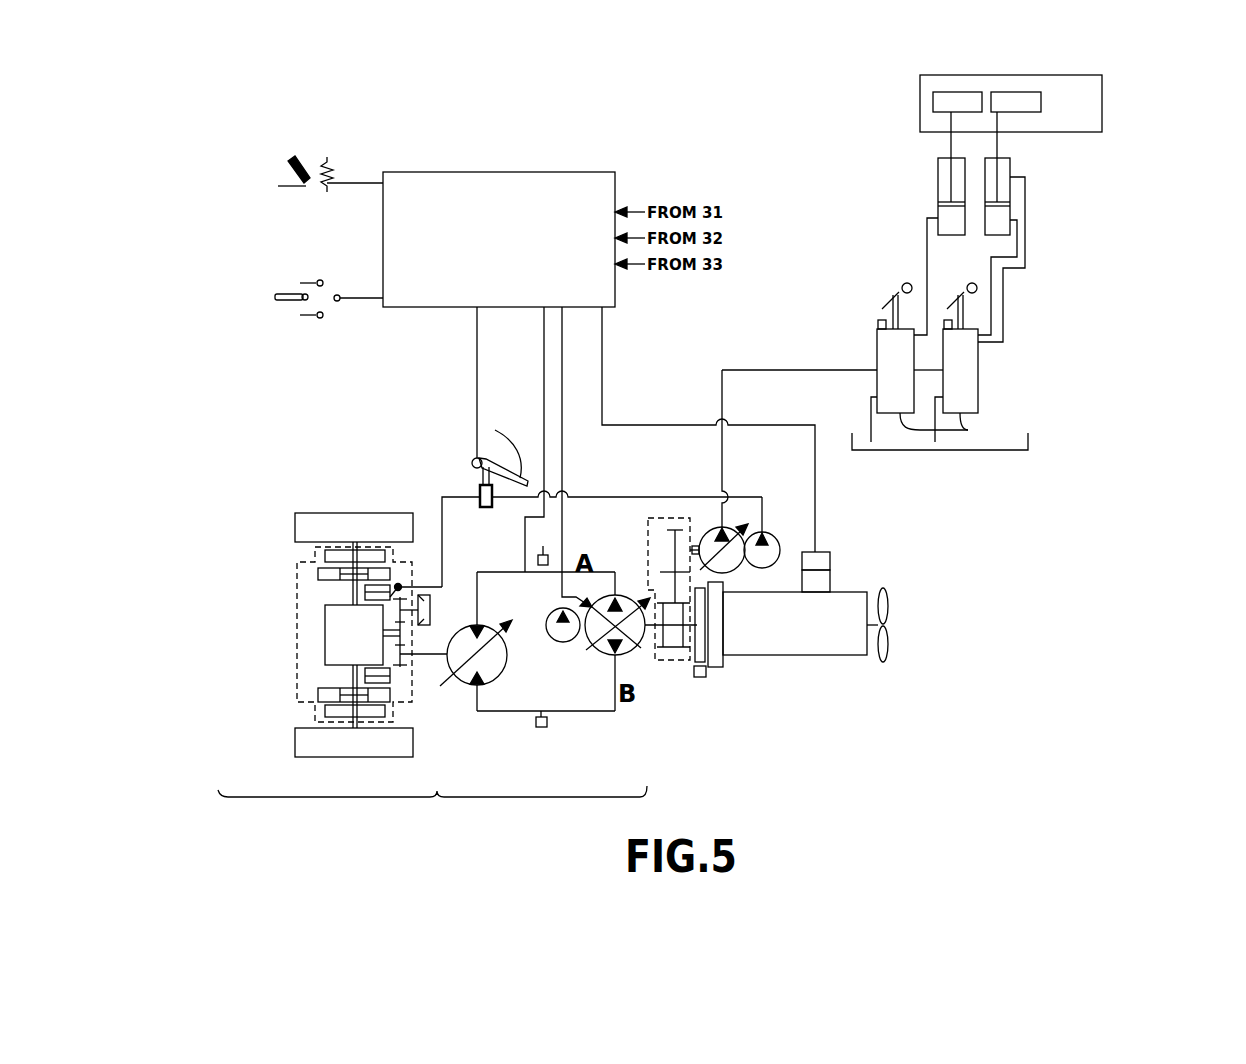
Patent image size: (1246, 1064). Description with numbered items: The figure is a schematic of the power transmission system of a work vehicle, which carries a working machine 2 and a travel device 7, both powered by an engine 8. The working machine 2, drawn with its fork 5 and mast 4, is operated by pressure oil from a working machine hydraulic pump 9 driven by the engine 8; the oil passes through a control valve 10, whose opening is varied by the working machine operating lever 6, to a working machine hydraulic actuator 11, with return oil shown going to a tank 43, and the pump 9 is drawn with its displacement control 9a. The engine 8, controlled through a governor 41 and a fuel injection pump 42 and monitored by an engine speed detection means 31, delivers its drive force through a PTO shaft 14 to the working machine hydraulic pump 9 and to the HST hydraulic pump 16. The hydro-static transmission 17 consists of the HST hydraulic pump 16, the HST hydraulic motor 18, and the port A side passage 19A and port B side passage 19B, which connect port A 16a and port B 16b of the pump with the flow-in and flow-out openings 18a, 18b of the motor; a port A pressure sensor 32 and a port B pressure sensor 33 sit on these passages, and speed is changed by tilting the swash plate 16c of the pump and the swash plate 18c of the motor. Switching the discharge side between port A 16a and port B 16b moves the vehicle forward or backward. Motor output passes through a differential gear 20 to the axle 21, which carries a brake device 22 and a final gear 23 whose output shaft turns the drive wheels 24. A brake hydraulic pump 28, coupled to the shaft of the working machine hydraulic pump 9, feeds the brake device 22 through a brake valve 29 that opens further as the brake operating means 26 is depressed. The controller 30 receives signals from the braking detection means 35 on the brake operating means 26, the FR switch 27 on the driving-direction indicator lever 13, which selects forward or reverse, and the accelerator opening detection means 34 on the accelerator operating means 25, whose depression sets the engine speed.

The working machine 2 is at (1097, 76).
The mast 4 is at (1014, 92).
The fork 5 is at (951, 91).
The working machine operating lever 6 is at (947, 306).
The travel device 7 is at (432, 809).
The engine 8 is at (827, 657).
The working machine hydraulic pump 9 is at (706, 530).
The pump displacement control 9a is at (731, 529).
The control valve 10 is at (968, 430).
The working machine hydraulic actuator 11 is at (995, 152).
The driving-direction indicator lever 13 is at (275, 297).
The PTO shaft 14 is at (668, 660).
The HST hydraulic pump 16 is at (632, 660).
The port A 16a is at (616, 596).
The port B 16b is at (610, 657).
The swash plate 16c is at (562, 642).
The hydro-static transmission 17 is at (557, 745).
The HST hydraulic motor 18 is at (455, 690).
The flow-in and flow-out opening 18a is at (474, 622).
The flow-in and flow-out opening 18b is at (479, 685).
The swash plate 18c is at (487, 656).
The port A side passage 19A is at (497, 572).
The port B side passage 19B is at (590, 711).
The differential gear 20 is at (325, 650).
The axle 21 is at (325, 676).
The brake device 22 is at (318, 574).
The final gear 23 is at (325, 555).
The drive wheels 24 is at (294, 524).
The accelerator operating means 25 is at (292, 176).
The brake operating means 26 is at (473, 456).
The FR switch 27 is at (296, 330).
The brake hydraulic pump 28 is at (782, 537).
The brake valve 29 is at (480, 491).
The controller 30 is at (495, 172).
The engine speed detection means 31 is at (706, 672).
The port A pressure sensor 32 is at (545, 544).
The port B pressure sensor 33 is at (540, 727).
The accelerator opening detection means 34 is at (313, 148).
The braking detection means 35 is at (474, 460).
The governor 41 is at (830, 556).
The fuel injection pump 42 is at (830, 582).
The tank 43 is at (1028, 448).